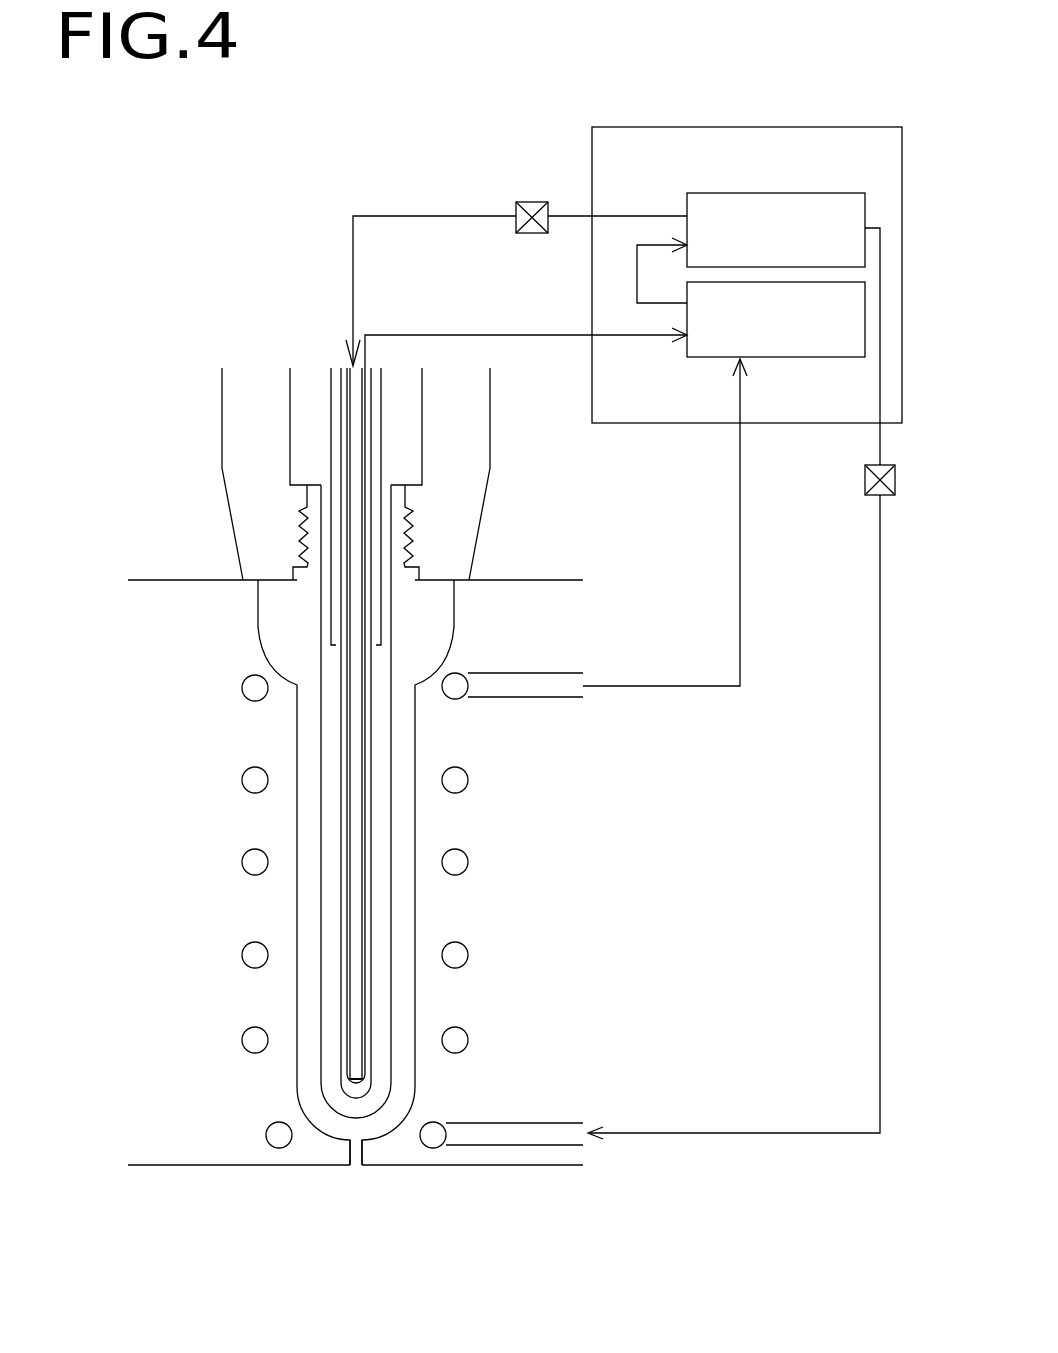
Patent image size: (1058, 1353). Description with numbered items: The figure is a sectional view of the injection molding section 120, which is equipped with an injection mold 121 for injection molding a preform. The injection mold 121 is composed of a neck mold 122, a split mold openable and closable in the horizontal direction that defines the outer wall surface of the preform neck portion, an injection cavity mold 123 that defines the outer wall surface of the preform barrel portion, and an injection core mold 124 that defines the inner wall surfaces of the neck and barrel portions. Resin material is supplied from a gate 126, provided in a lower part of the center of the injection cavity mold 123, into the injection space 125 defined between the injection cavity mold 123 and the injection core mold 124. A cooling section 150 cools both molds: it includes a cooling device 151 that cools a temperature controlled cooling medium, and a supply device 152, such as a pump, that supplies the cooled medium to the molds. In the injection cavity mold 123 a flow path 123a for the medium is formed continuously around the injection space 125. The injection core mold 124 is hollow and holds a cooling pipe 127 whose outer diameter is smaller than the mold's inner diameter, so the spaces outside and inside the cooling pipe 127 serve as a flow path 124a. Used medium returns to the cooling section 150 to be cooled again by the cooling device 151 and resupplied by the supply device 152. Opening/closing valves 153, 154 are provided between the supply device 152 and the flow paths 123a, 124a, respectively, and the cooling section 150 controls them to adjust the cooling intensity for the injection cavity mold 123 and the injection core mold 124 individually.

The injection molding section 120 is at (347, 633).
The injection mold 121 is at (195, 232).
The neck mold 122 is at (263, 500).
The injection cavity mold 123 is at (194, 1147).
The flow path 123a is at (468, 955).
The injection core mold 124 is at (380, 838).
The flow path 124a is at (347, 755).
The injection space 125 is at (320, 921).
The gate 126 is at (353, 1168).
The cooling pipe 127 is at (375, 1070).
The cooling section 150 is at (800, 127).
The cooling device 151 is at (793, 358).
The supply device 152 is at (840, 193).
The opening/closing valve 153 is at (875, 497).
The opening/closing valve 154 is at (532, 200).